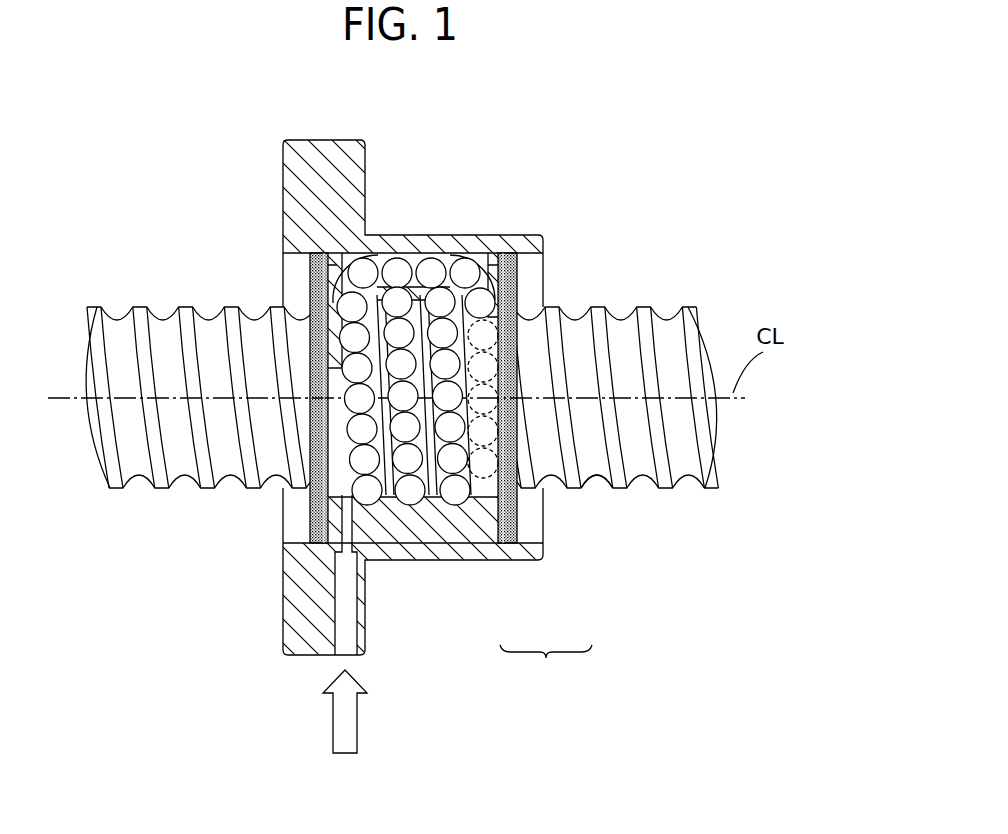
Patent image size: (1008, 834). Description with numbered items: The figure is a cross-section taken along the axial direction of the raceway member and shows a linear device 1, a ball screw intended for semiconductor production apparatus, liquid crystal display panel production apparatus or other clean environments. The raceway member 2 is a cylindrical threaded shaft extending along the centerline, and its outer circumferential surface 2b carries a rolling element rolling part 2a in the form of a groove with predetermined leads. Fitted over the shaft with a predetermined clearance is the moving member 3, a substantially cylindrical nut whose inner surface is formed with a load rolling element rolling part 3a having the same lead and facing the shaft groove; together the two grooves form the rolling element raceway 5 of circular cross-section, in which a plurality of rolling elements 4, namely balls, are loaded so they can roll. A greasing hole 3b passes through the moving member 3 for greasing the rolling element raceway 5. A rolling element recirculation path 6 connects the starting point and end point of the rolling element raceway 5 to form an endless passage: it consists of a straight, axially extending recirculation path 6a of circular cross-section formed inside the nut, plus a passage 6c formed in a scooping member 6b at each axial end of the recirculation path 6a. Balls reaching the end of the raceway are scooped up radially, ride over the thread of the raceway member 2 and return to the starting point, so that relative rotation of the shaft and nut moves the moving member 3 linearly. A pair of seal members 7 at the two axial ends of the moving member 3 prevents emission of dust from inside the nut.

The linear device 1 is at (531, 135).
The raceway member 2 is at (643, 307).
The rolling element rolling part 2a is at (462, 497).
The outer circumferential surface 2b is at (615, 492).
The moving member 3 is at (448, 235).
The load rolling element rolling part 3a is at (445, 497).
The greasing hole 3b is at (340, 636).
The rolling elements 4 is at (410, 495).
The rolling element raceway 5 is at (546, 668).
The rolling element recirculation path 6 is at (481, 253).
The recirculation path 6a is at (414, 257).
The scooping member 6b is at (486, 268).
The passage 6c is at (312, 280).
The seal members 7 is at (312, 505).